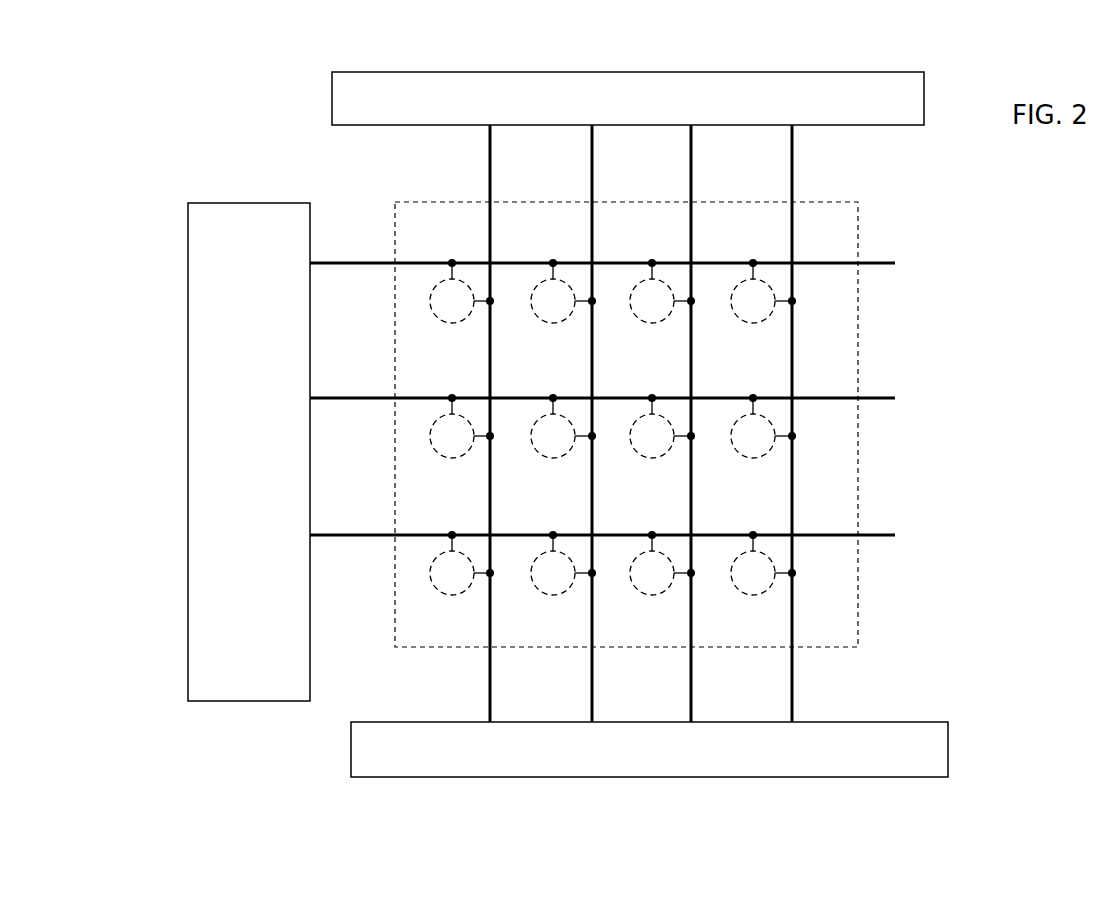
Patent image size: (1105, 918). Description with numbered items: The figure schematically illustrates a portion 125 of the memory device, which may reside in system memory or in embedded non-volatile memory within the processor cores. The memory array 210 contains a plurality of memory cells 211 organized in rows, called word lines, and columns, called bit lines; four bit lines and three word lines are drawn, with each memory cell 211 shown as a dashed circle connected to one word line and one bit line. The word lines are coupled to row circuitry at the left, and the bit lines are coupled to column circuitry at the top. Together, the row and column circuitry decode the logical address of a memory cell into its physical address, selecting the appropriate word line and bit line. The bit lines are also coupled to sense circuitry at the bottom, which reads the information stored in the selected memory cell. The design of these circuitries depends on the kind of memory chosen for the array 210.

The portion of the memory device 125 is at (223, 120).
The memory array 210 is at (858, 353).
The memory cells 211 is at (756, 464).